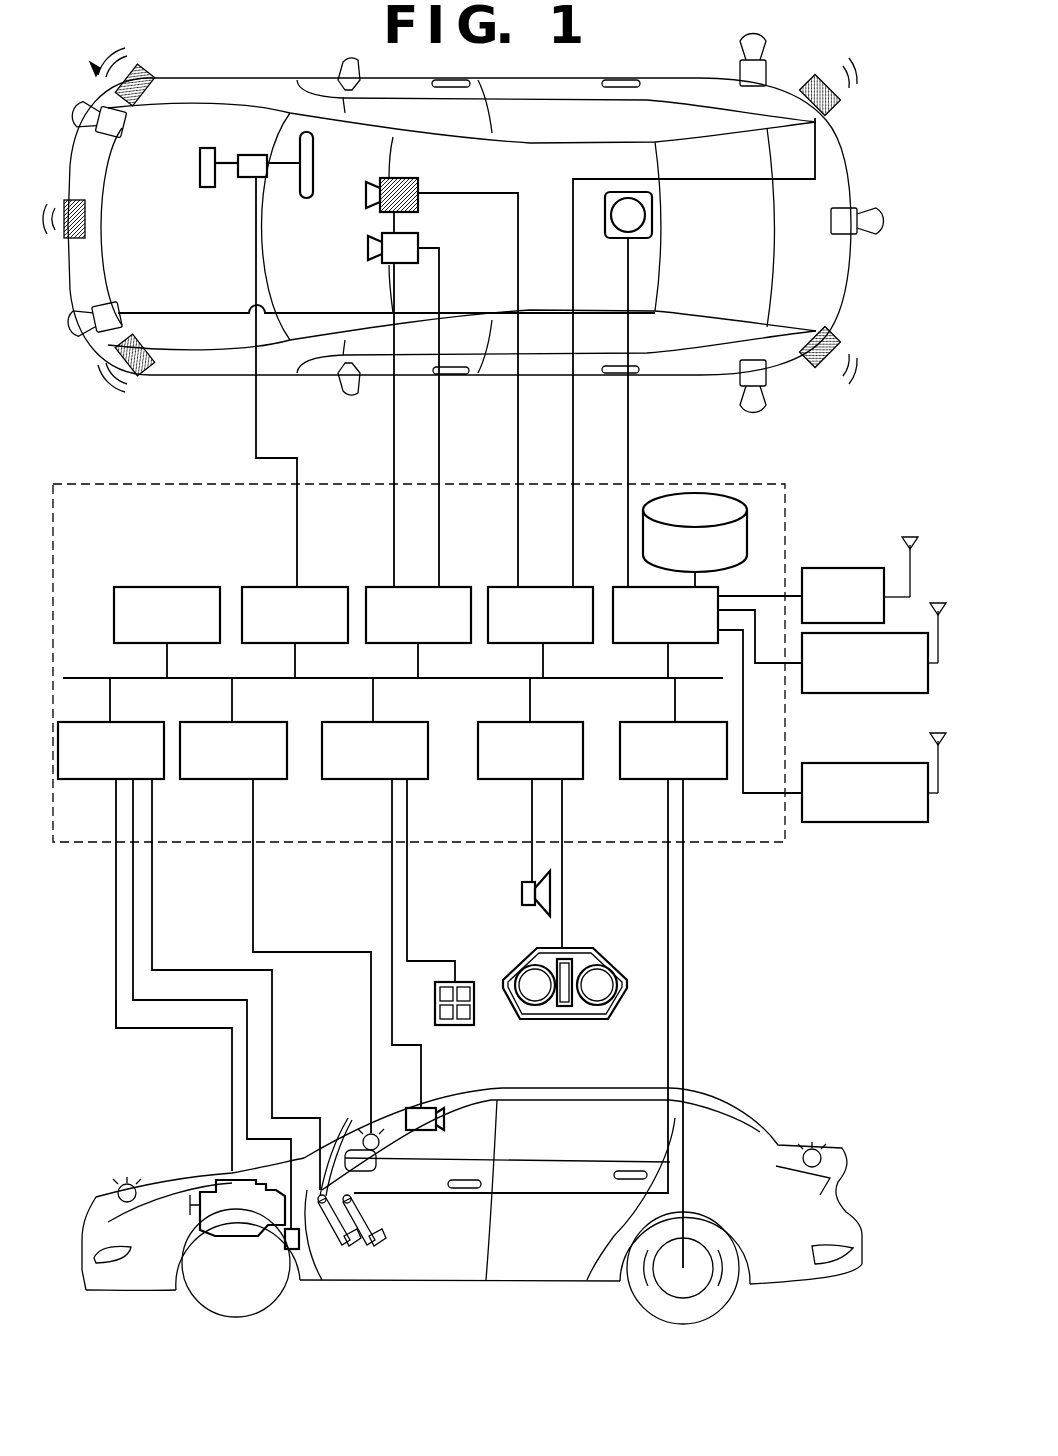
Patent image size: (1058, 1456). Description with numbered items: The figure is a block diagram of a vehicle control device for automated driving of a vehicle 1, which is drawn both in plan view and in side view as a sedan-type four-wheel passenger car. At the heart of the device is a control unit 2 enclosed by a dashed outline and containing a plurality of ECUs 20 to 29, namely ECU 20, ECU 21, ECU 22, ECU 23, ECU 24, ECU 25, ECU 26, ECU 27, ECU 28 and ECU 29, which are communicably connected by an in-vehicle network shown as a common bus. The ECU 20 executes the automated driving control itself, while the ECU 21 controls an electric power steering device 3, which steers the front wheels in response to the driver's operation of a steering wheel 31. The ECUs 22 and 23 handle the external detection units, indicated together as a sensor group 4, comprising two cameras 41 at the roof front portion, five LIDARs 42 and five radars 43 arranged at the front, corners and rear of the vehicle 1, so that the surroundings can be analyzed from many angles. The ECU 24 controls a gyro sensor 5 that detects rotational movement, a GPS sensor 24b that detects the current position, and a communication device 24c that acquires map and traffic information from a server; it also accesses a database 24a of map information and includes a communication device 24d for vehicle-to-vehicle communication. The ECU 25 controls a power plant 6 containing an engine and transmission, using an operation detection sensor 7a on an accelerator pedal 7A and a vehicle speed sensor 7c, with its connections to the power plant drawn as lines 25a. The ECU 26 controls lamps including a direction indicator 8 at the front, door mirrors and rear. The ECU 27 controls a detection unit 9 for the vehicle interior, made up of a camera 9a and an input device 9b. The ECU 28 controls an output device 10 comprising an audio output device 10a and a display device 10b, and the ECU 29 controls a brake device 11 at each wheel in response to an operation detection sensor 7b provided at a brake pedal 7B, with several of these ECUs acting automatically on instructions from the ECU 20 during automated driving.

The vehicle 1 is at (862, 129).
The control unit 2 is at (752, 855).
The electric power steering device 3 is at (207, 188).
The sensor group 4 is at (95, 72).
The gyro sensor 5 is at (653, 216).
The power plant 6 is at (200, 1180).
The operation detection sensor 7a is at (352, 1110).
The operation detection sensor 7b is at (351, 1196).
The vehicle speed sensor 7c is at (292, 1252).
The accelerator pedal 7A is at (356, 1244).
The brake pedal 7B is at (384, 1240).
The direction indicator 8 is at (120, 1192).
The detection unit 9 is at (473, 1056).
The camera 9a is at (418, 1108).
The input device 9b is at (455, 1026).
The output device 10 is at (555, 943).
The audio output device 10a is at (522, 888).
The display device 10b is at (520, 963).
The brake device 11 is at (688, 1282).
The ECU 20 is at (200, 586).
The ECU 21 is at (328, 586).
The ECU 22 is at (422, 586).
The ECU 23 is at (548, 586).
The ECU 24 is at (619, 586).
The database 24a is at (695, 492).
The GPS sensor 24b is at (858, 568).
The communication device 24c is at (850, 694).
The communication device 24d is at (850, 823).
The ECU 25 is at (82, 783).
The ECU connection 25a is at (112, 1050).
The ECU 26 is at (208, 783).
The ECU 27 is at (355, 783).
The ECU 28 is at (513, 783).
The ECU 29 is at (690, 783).
The steering wheel 31 is at (305, 199).
The camera 41 is at (422, 200).
The LIDAR 42 is at (116, 138).
The radar 43 is at (135, 105).